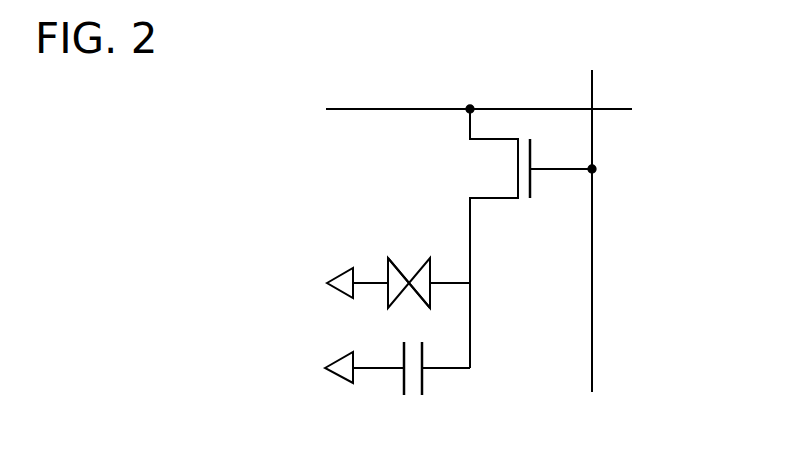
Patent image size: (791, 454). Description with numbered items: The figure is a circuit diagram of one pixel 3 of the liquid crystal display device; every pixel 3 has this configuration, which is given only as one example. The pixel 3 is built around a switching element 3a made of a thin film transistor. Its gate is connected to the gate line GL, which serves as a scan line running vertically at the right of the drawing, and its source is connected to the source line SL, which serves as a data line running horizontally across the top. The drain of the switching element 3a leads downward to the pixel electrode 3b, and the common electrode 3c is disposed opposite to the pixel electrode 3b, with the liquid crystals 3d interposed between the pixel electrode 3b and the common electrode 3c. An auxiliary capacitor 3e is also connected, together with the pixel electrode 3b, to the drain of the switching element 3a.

The source line SL is at (358, 108).
The gate line GL is at (592, 350).
The pixel 3 is at (431, 208).
The switching element 3a is at (487, 169).
The pixel electrode 3b is at (438, 278).
The common electrode 3c is at (384, 279).
The liquid crystals 3d is at (410, 266).
The auxiliary capacitor 3e is at (398, 359).